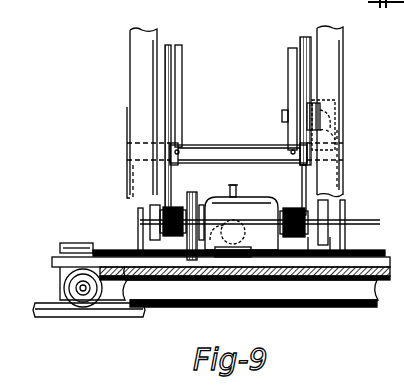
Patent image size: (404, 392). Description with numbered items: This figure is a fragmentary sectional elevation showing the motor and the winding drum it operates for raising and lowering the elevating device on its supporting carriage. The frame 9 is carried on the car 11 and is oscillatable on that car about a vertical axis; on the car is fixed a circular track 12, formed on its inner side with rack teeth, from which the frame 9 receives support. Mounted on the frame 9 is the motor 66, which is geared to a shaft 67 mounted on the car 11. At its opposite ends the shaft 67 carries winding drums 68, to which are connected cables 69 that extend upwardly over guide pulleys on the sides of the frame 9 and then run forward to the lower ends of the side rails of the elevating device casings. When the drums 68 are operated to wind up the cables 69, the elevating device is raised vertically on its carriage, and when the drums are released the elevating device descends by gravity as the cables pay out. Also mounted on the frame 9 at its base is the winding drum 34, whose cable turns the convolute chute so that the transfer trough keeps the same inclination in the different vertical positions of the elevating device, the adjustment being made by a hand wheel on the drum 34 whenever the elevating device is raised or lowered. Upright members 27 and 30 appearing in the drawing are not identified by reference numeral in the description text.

The frame 9 is at (342, 230).
The car 11 is at (335, 292).
The circular track 12 is at (75, 250).
The upright post 27 is at (317, 100).
The guide bar 30 is at (178, 124).
The winding drum 34 is at (322, 104).
The motor 66 is at (212, 256).
The shaft 67 is at (270, 244).
The winding drums 68 is at (172, 205).
The cables 69 is at (166, 117).